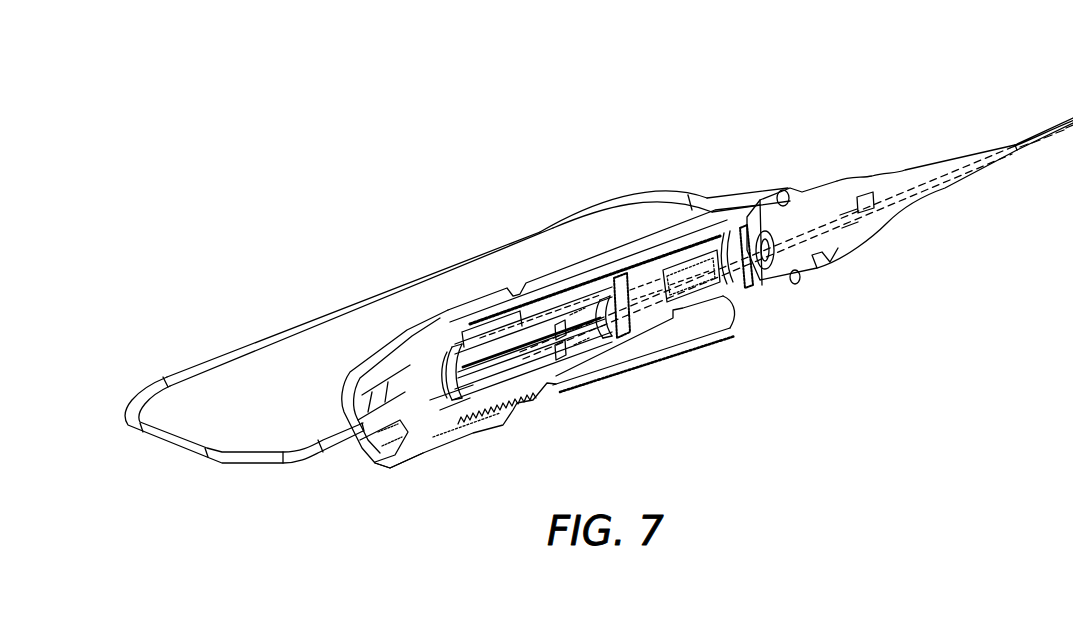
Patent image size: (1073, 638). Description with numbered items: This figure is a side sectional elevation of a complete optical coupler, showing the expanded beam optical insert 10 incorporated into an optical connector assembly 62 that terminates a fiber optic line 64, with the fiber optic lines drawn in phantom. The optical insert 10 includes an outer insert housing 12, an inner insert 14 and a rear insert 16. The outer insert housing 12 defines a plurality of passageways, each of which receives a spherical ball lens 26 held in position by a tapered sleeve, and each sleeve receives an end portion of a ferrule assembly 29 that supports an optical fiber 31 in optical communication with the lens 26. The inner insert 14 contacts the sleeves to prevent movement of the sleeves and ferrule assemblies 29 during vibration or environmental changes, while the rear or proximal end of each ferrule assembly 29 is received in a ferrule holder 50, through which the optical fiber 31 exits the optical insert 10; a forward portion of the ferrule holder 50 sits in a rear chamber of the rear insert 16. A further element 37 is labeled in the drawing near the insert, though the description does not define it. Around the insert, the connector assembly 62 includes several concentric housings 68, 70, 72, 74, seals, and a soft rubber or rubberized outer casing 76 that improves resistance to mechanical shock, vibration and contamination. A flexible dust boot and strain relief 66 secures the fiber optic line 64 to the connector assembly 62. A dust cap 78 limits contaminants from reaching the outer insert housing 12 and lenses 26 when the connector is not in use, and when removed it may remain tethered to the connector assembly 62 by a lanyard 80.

The optical connector assembly 62 is at (504, 130).
The fiber optic line 64 is at (1032, 134).
The flexible dust boot and strain relief 66 is at (837, 181).
The concentric housing 68 is at (777, 285).
The concentric housing 70 is at (710, 327).
The concentric housing 72 is at (723, 290).
The concentric housing 74 is at (607, 342).
The outer casing 76 is at (670, 348).
The dust cap 78 is at (392, 465).
The lanyard 80 is at (313, 320).
The expanded beam optical insert 10 is at (513, 315).
The outer insert housing 12 is at (470, 357).
The inner insert 14 is at (493, 332).
The rear insert 16 is at (545, 313).
The spherical ball lens 26 is at (470, 375).
The ferrule assembly 29 is at (507, 342).
The optical fiber 31 is at (593, 342).
The collar ring 37 is at (457, 352).
The ferrule holder 50 is at (600, 312).